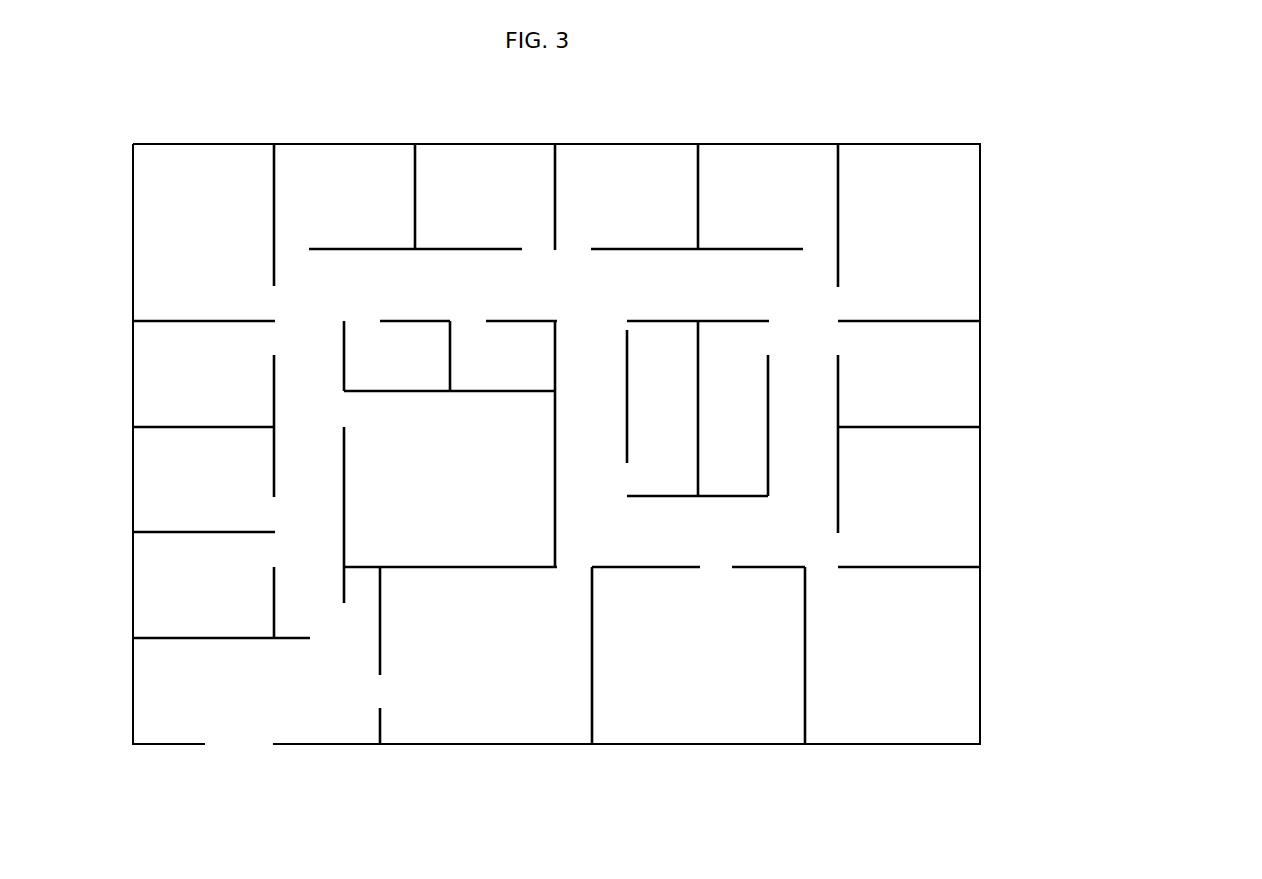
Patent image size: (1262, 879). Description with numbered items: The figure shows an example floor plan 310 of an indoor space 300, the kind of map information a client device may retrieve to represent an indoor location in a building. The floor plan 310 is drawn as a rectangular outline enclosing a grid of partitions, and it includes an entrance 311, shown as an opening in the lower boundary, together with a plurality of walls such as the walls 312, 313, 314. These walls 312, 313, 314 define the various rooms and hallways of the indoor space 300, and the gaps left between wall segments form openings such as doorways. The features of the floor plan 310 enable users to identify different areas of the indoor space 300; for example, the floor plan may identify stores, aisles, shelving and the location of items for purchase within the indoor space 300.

The indoor space 300 is at (1231, 51).
The floor plan 310 is at (802, 772).
The entrance 311 is at (238, 745).
The wall 312 is at (557, 356).
The wall 313 is at (591, 644).
The wall 314 is at (381, 251).